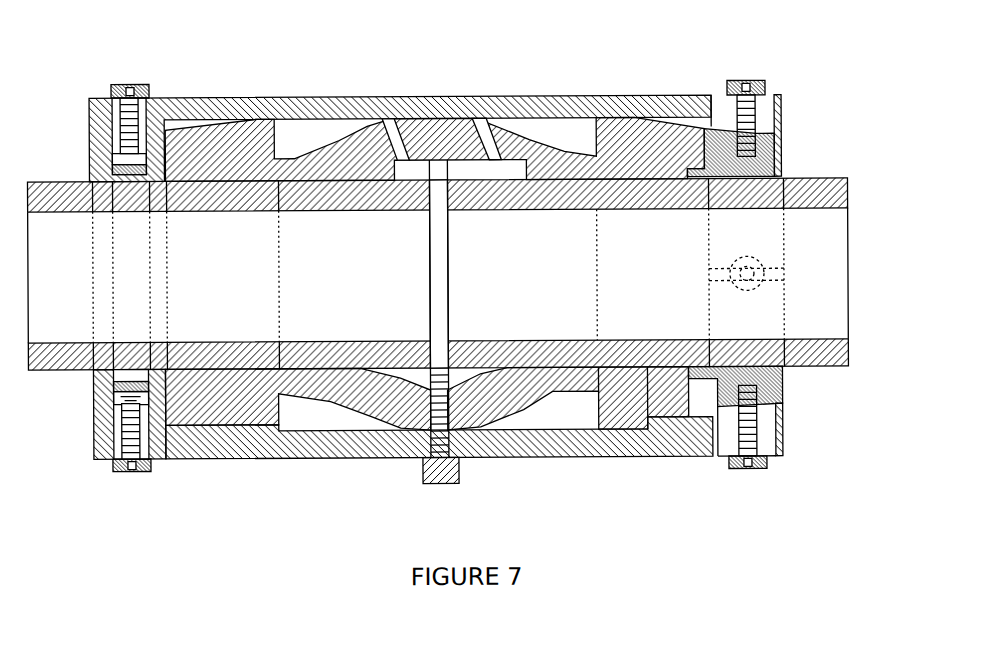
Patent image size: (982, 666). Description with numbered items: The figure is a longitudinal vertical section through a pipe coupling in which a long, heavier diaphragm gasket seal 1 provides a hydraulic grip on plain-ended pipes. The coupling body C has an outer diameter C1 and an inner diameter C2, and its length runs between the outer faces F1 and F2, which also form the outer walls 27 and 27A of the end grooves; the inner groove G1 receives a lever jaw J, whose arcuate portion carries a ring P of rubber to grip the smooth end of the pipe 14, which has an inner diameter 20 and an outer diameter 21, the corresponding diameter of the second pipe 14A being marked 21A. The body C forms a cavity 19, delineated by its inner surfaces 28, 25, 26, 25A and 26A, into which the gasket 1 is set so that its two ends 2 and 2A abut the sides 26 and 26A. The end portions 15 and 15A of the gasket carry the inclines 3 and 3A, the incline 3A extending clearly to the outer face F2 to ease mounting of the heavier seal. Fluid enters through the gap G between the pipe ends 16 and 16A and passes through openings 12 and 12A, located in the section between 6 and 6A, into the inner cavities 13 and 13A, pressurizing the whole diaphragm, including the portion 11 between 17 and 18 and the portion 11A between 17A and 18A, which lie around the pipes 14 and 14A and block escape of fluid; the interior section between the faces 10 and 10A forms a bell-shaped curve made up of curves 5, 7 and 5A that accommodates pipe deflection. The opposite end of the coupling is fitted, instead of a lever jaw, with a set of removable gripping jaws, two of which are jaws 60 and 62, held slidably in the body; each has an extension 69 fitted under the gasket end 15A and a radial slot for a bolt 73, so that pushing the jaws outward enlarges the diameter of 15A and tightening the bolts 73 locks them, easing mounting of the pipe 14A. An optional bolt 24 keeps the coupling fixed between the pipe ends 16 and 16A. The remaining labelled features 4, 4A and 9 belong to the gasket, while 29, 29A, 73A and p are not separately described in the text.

The diaphragm gasket seal 1 is at (360, 420).
The gasket end 2 is at (214, 345).
The gasket end 2A is at (716, 457).
The incline 3 is at (208, 448).
The incline 3A is at (690, 456).
The lower plate portion 4 is at (268, 445).
The lower plate portion (right) 4A is at (620, 431).
The bell curve 5 is at (338, 125).
The bell curve 5A is at (505, 120).
The gasket section limit 6 is at (400, 168).
The gasket section limit 6A is at (482, 168).
The bell curve 7 is at (445, 118).
The slot 9 is at (403, 120).
The gasket face 10 is at (300, 343).
The gasket face 10A is at (580, 343).
The diaphragm portion 11 is at (290, 212).
The diaphragm portion 11A is at (565, 212).
The opening 12 is at (418, 175).
The opening 12A is at (456, 175).
The inner cavity 13 is at (302, 438).
The inner cavity 13A is at (535, 430).
The pipe 14 is at (78, 340).
The pipe 14A is at (560, 212).
The gasket end portion 15 is at (243, 130).
The gasket end portion 15A is at (688, 130).
The pipe end 16 is at (396, 343).
The pipe end 16A is at (478, 343).
The diaphragm portion boundary 17 is at (193, 343).
The diaphragm portion boundary 17A is at (706, 343).
The diaphragm portion boundary 18 is at (350, 343).
The diaphragm portion boundary 18A is at (537, 343).
The cavity 19 is at (380, 343).
The inner diameter of pipe 20 is at (265, 343).
The outer diameter of pipe 21 is at (92, 183).
The pipe (right) 21A is at (785, 181).
The optional bolt 24 is at (445, 482).
The inner surface of coupling body 25 is at (215, 114).
The inner surface of coupling body 25A is at (642, 112).
The cavity side 26 is at (228, 182).
The cavity side 26A is at (713, 128).
The outer groove wall 27 is at (100, 176).
The outer groove wall 27A is at (790, 373).
The inner surface of coupling body 28 is at (518, 117).
The plate section 29 is at (288, 455).
The plate section (right) 29A is at (640, 471).
The jaw 60 is at (762, 200).
The jaw 62 is at (718, 333).
The jaw extension 69 is at (690, 200).
The bolt 73 is at (133, 83).
The flange wall 73A is at (768, 102).
The coupling body C is at (440, 118).
The outer diameter of coupling body C1 is at (434, 462).
The inner diameter of coupling body C2 is at (95, 216).
The gap G is at (450, 245).
The inner groove G1 is at (115, 427).
The outer face F1 is at (95, 454).
The outer face F2 is at (786, 441).
The lever jaw J is at (112, 377).
The ring P is at (130, 345).
The point p is at (756, 343).